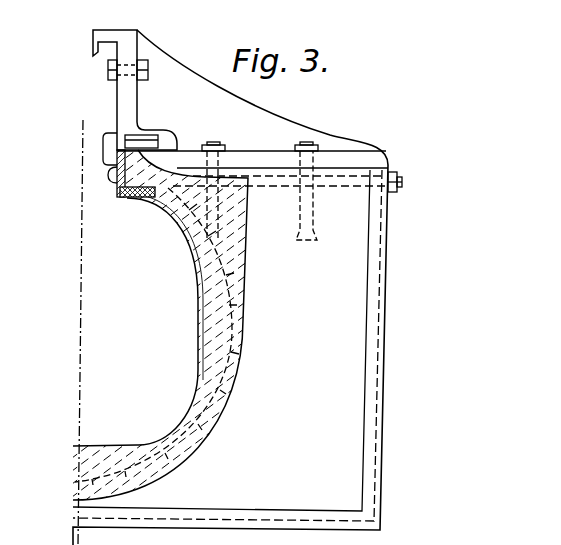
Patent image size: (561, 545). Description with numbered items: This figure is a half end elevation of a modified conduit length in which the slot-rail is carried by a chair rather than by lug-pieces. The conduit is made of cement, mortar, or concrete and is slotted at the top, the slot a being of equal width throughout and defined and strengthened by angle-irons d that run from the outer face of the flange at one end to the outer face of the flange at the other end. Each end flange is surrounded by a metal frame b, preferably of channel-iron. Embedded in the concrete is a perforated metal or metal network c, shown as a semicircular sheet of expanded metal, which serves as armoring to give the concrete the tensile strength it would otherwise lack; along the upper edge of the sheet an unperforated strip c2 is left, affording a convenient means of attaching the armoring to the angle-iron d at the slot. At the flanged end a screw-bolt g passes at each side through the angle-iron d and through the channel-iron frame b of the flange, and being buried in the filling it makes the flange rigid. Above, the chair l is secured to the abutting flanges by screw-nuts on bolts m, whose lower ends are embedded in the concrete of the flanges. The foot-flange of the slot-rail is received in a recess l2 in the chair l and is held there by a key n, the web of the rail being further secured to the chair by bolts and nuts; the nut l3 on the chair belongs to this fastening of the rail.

The slot a is at (91, 158).
The metal frame b is at (380, 352).
The perforated metal or metal network c is at (240, 335).
The unperforated strip c2 is at (128, 199).
The angle-iron d is at (117, 197).
The key n is at (118, 162).
The chair l is at (142, 90).
The recess l2 is at (163, 146).
The bracket nut l3 is at (148, 63).
The bolt m is at (310, 147).
The screw-bolt g is at (403, 182).